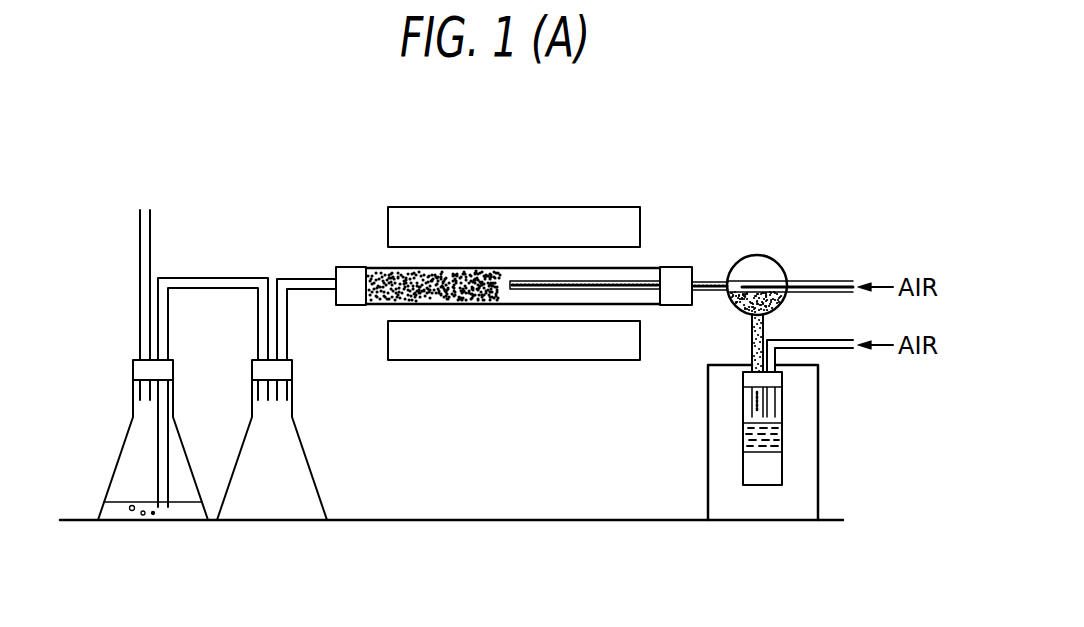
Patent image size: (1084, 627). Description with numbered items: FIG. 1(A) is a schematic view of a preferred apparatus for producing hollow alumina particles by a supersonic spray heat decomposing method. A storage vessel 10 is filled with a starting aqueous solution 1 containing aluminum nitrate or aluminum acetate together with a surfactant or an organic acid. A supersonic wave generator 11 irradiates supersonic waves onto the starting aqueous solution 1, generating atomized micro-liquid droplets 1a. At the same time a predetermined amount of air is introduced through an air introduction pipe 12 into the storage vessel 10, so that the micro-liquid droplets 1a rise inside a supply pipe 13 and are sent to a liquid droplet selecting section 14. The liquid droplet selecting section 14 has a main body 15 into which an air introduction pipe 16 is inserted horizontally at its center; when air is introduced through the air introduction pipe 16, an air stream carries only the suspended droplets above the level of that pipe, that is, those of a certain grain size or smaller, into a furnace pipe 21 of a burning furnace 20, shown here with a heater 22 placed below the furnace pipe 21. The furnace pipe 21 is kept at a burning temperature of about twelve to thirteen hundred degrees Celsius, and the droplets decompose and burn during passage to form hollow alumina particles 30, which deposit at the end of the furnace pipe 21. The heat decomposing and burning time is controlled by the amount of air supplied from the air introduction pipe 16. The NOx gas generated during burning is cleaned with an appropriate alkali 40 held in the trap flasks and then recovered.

The starting aqueous solution 1 is at (783, 428).
The micro-liquid droplets 1a is at (728, 310).
The storage vessel 10 is at (783, 400).
The supersonic wave generator 11 is at (750, 468).
The air introduction pipe 12 is at (790, 340).
The supply pipe 13 is at (751, 345).
The liquid droplet selecting section 14 is at (748, 247).
The main body 15 is at (780, 260).
The air introduction pipe 16 is at (836, 283).
The burning furnace 20 is at (525, 192).
The furnace pipe 21 is at (655, 266).
The lower heater 22 is at (510, 347).
The hollow alumina particles 30 is at (385, 272).
The alkali 40 is at (100, 513).